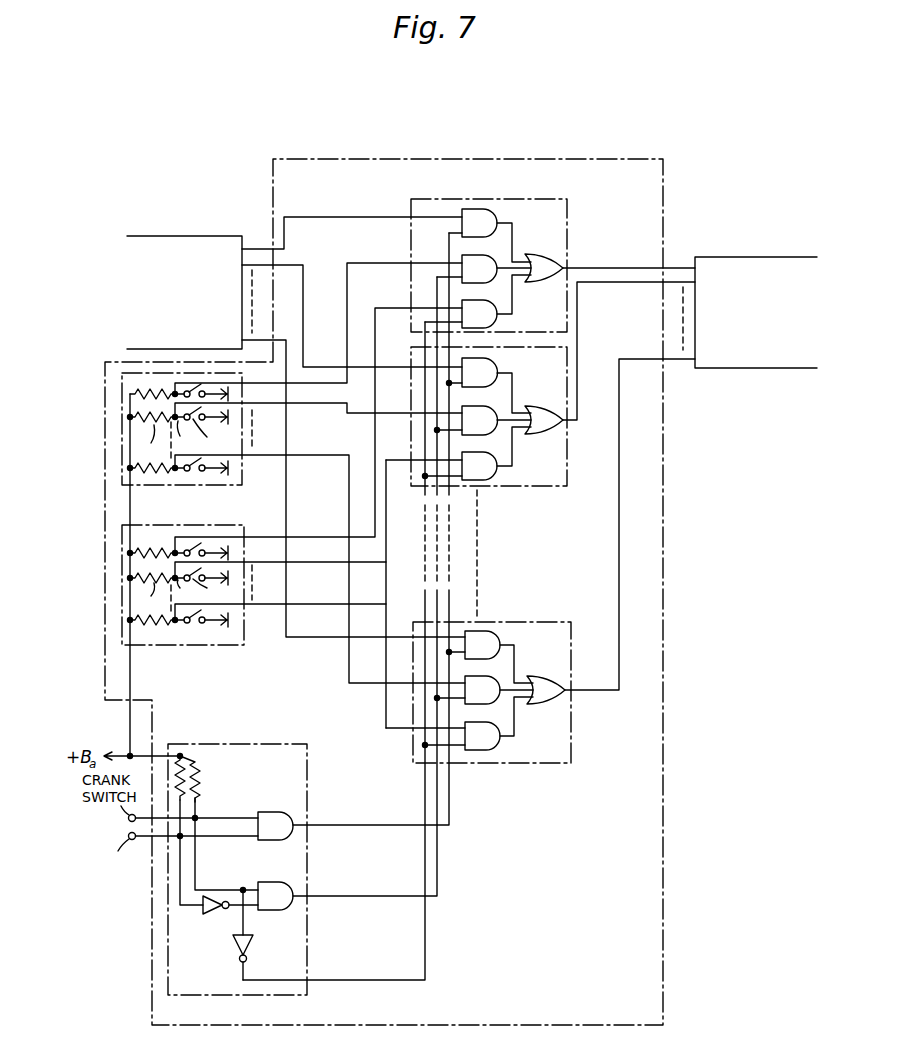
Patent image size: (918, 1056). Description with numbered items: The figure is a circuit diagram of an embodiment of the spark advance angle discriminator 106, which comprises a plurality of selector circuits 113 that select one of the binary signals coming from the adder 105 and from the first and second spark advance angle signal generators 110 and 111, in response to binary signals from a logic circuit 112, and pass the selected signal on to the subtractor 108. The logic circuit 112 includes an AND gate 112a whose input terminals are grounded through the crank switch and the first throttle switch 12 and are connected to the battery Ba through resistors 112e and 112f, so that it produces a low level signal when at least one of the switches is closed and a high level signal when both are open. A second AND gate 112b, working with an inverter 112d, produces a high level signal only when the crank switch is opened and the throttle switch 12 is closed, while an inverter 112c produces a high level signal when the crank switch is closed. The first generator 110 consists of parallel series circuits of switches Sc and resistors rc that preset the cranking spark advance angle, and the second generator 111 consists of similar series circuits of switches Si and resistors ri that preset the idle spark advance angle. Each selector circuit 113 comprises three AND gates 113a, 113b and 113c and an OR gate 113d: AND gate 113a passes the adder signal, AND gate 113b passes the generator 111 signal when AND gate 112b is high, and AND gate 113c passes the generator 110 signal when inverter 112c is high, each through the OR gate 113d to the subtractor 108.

The adder 105 is at (165, 236).
The discriminator 106 is at (480, 157).
The subtractor 108 is at (764, 257).
The first spark advance angle signal generator 110 is at (172, 646).
The second spark advance angle signal generator 111 is at (163, 487).
The logic circuit 112 is at (309, 806).
The AND gate 112a is at (256, 812).
The AND gate 112b is at (256, 882).
The inverter 112c is at (247, 946).
The inverter 112d is at (208, 915).
The resistor 112e is at (197, 794).
The resistor 112f is at (192, 765).
The selector circuit 113 is at (570, 250).
The AND gate 113a is at (470, 209).
The AND gate 113b is at (492, 274).
The AND gate 113c is at (497, 319).
The OR gate 113d is at (552, 255).
The first throttle switch 12 is at (159, 859).